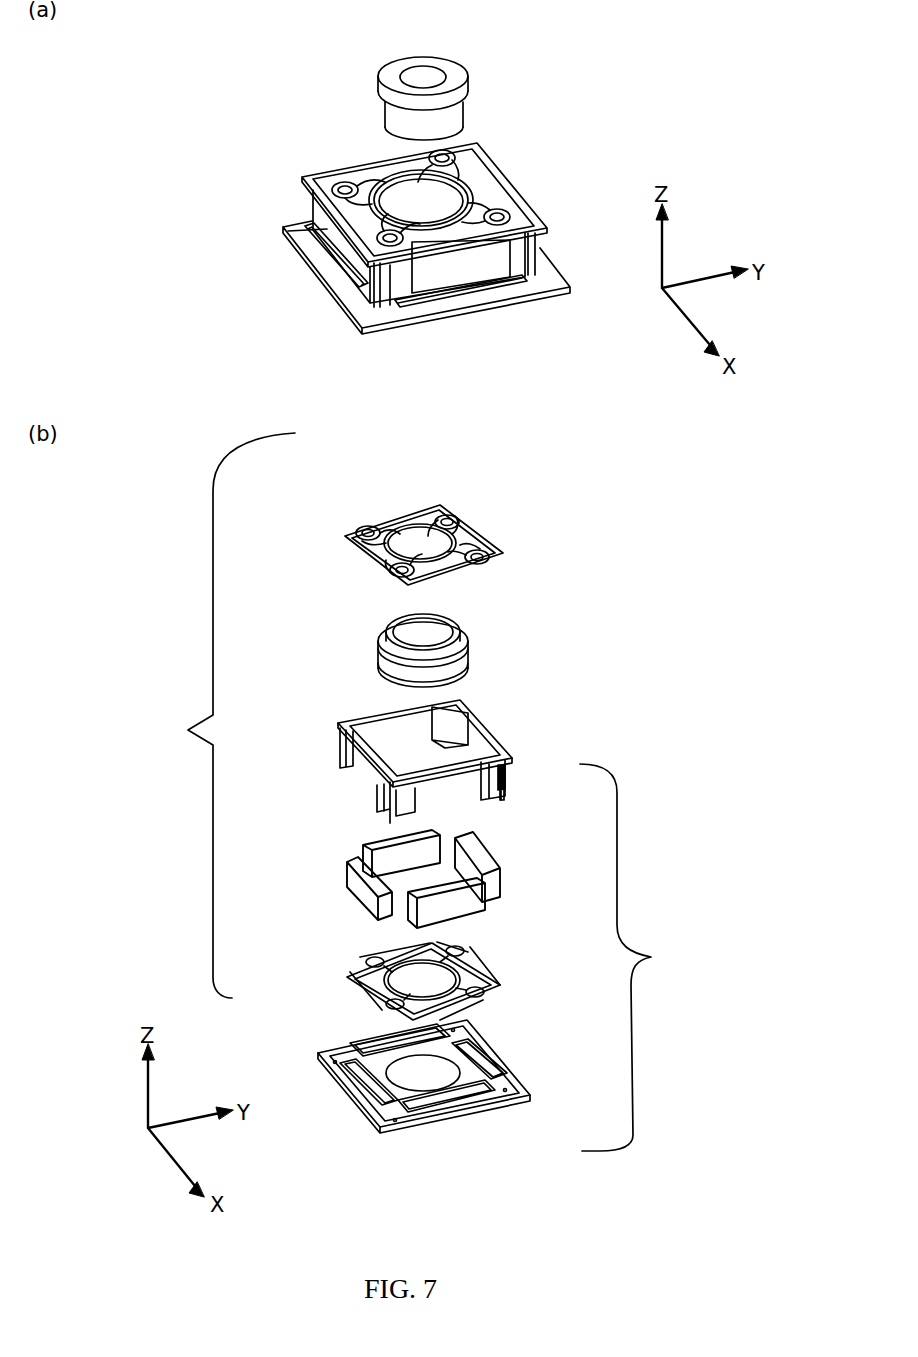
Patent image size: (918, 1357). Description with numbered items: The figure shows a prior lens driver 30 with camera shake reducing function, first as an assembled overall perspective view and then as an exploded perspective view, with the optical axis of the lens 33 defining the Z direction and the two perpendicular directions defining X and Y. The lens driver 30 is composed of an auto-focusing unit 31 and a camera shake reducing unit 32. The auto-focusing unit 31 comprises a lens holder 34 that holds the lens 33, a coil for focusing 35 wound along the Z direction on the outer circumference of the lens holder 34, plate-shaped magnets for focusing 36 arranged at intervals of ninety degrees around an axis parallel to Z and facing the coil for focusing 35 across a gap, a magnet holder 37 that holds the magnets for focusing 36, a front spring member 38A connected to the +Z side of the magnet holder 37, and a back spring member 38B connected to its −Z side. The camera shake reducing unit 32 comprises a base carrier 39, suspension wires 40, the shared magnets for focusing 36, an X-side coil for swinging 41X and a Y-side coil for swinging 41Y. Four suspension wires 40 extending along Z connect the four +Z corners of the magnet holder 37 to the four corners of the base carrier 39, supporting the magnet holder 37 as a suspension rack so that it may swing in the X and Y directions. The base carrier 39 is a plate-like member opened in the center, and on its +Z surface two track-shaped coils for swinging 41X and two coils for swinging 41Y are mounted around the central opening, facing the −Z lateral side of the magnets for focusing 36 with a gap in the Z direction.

The lens driver with camera shake reducing function 30 is at (281, 222).
The auto-focusing unit 31 is at (220, 715).
The camera shake reducing unit 32 is at (631, 957).
The lens 33 is at (457, 72).
The lens holder 34 is at (400, 633).
The coil for focusing 35 is at (393, 668).
The magnet for focusing 36 is at (348, 880).
The magnet holder 37 is at (340, 727).
The front spring member 38A is at (375, 518).
The back spring member 38B is at (355, 978).
The base carrier 39 is at (512, 1085).
The suspension wire 40 is at (504, 797).
The coil for swinging at X side 41X is at (468, 1020).
The coil for swinging at Y side 41Y is at (340, 1055).